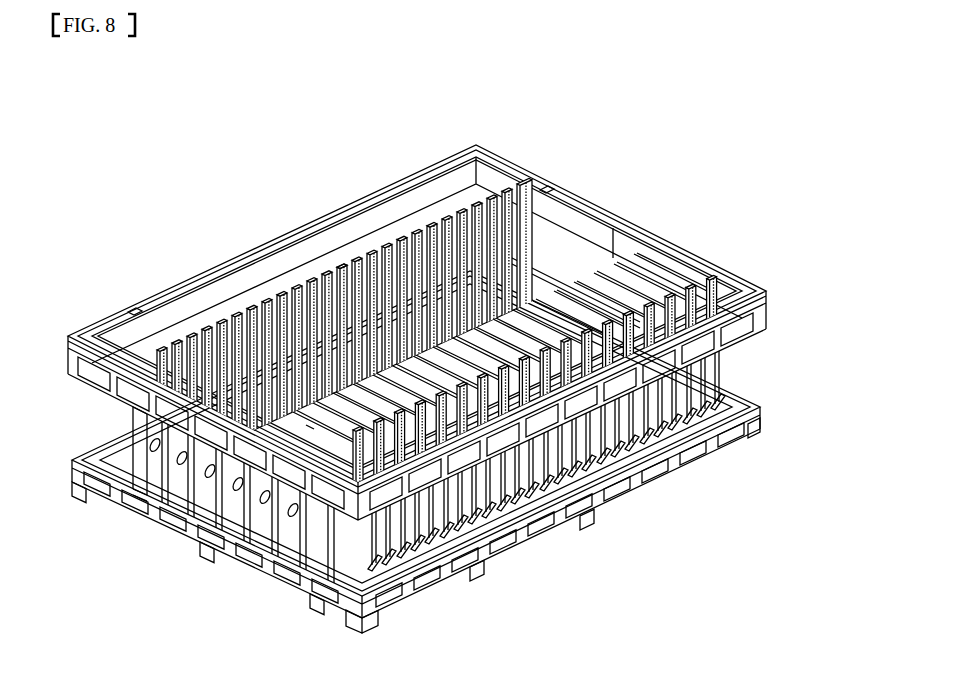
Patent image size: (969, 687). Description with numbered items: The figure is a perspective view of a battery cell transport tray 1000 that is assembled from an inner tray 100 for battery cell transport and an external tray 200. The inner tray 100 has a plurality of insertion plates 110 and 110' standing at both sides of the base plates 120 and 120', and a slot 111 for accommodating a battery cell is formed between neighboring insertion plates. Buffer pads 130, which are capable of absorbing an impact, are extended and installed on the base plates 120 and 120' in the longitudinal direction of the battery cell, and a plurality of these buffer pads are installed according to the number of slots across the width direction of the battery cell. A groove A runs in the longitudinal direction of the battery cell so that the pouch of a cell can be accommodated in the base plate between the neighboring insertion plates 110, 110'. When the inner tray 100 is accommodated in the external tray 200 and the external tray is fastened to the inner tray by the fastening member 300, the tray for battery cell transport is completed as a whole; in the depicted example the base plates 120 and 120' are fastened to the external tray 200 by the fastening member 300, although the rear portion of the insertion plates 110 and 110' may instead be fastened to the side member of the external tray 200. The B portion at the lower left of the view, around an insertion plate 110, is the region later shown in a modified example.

The battery cell transport tray 1000 is at (867, 124).
The inner tray 100 is at (396, 238).
The insertion plate 110 is at (344, 383).
The insertion plate 110' is at (584, 458).
The slot 111 is at (334, 266).
The base plate 120 is at (555, 482).
The base plate 120' is at (545, 458).
The buffer pad 130 is at (497, 353).
The external tray 200 is at (593, 188).
The fastening member 300 is at (553, 506).
The groove A is at (310, 427).
The B portion B is at (135, 500).